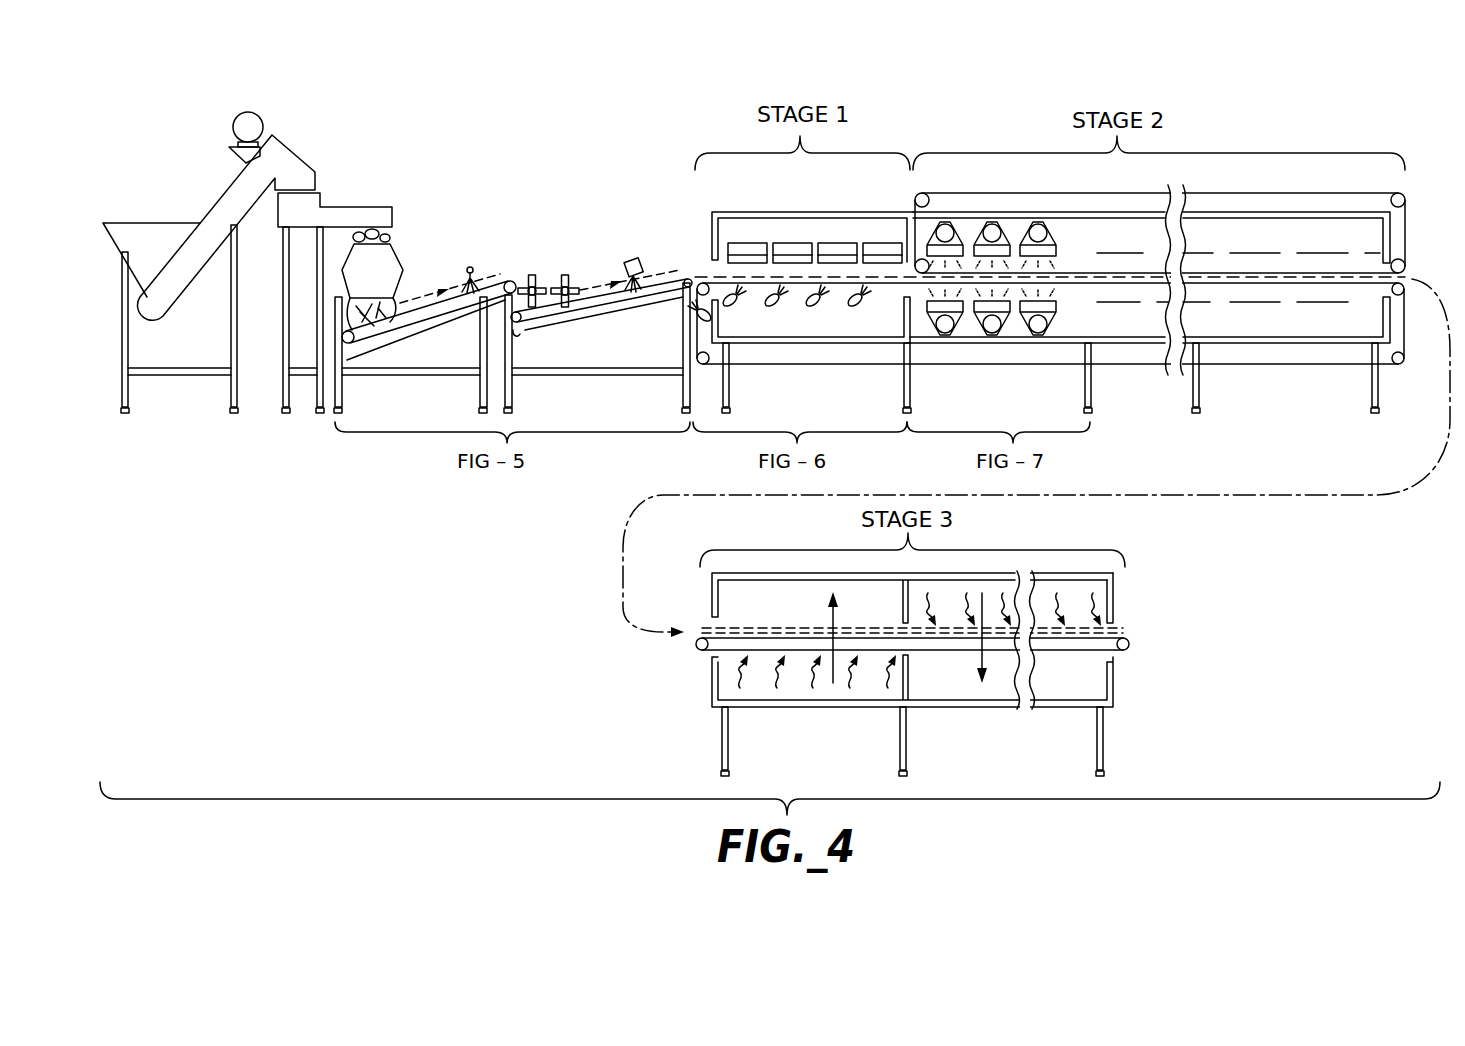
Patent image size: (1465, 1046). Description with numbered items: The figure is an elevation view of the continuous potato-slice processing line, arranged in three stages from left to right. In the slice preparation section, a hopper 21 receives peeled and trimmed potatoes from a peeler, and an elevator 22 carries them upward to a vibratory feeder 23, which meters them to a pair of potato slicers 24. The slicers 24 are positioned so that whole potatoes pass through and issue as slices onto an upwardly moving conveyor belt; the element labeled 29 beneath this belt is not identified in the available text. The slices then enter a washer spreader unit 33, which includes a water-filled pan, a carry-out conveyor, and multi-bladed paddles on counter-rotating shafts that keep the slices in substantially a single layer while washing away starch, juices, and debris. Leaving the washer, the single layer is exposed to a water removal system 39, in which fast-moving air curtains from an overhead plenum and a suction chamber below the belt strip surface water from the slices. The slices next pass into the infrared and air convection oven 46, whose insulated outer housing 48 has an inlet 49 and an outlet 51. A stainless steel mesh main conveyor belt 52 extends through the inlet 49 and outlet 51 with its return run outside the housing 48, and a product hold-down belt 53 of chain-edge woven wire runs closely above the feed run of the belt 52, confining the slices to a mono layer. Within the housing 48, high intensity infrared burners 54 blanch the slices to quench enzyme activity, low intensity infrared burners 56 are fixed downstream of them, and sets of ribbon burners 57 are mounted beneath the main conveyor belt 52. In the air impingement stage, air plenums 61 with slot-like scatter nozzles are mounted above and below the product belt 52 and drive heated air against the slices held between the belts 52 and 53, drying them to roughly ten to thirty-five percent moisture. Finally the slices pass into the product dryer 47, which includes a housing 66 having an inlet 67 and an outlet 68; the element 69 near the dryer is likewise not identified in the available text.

The hopper 21 is at (156, 223).
The elevator 22 is at (222, 197).
The vibratory feeder 23 is at (322, 196).
The potato slicers 24 is at (393, 247).
The first inclined conveyor 29 is at (342, 397).
The washer spreader unit 33 is at (512, 397).
The water removal system 39 is at (632, 259).
The infrared and air convection oven 46 is at (1029, 198).
The product dryer 47 is at (1058, 583).
The insulated outer housing 48 is at (1043, 345).
The inlet 49 is at (716, 262).
The outlet 51 is at (1383, 268).
The main conveyor belt 52 is at (1345, 367).
The product hold-down belt 53 is at (1290, 212).
The high intensity infrared burners 54 is at (740, 243).
The low intensity infrared burners 56 is at (830, 243).
The ribbon burners 57 is at (768, 304).
The air plenums 61 is at (1055, 238).
The housing 66 is at (1103, 597).
The inlet 67 is at (713, 628).
The outlet 68 is at (1120, 627).
The lower tank 69 is at (698, 650).